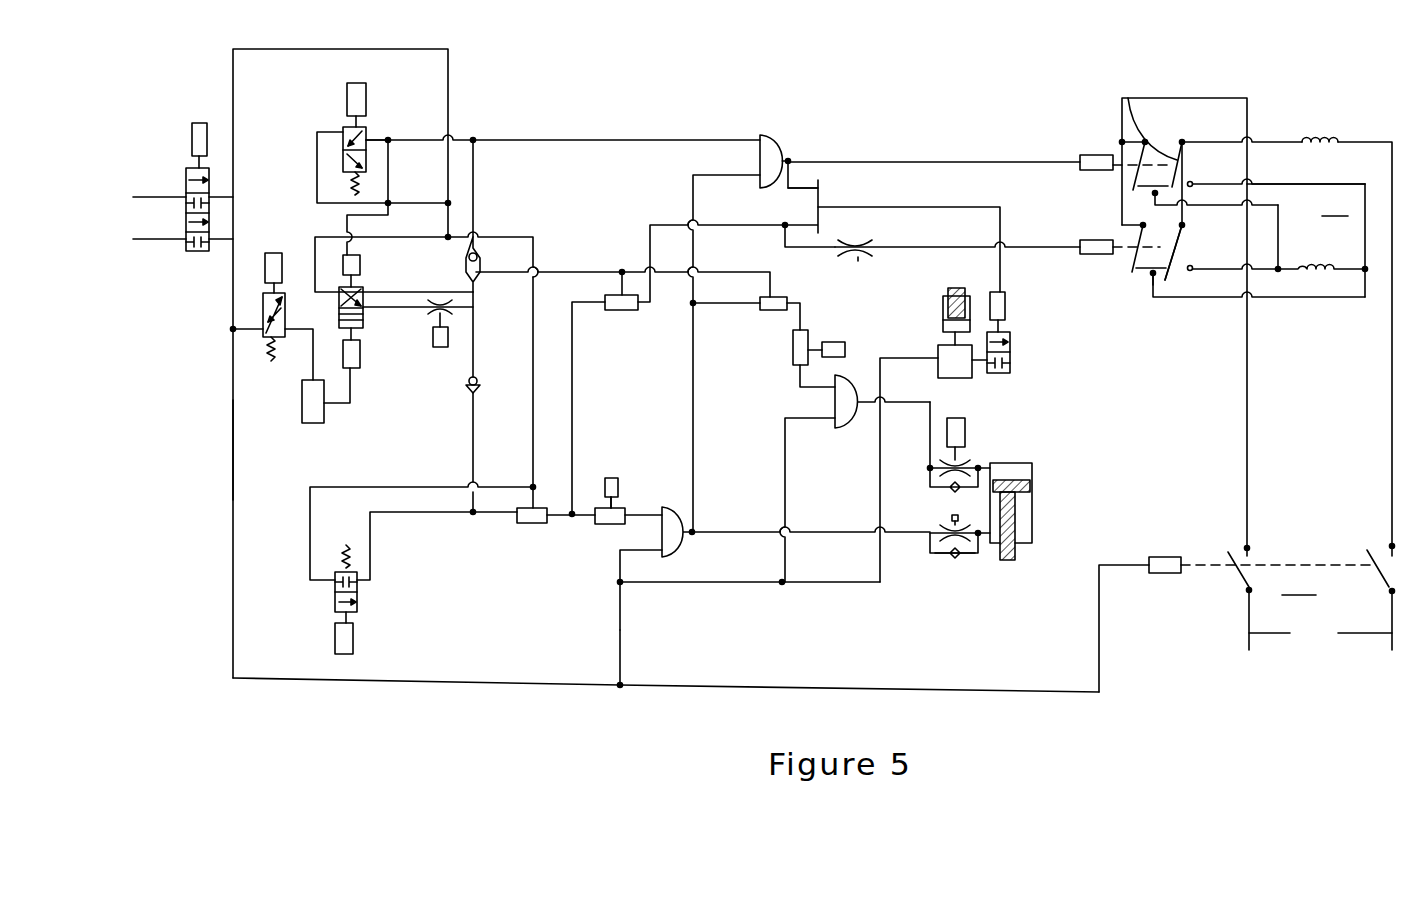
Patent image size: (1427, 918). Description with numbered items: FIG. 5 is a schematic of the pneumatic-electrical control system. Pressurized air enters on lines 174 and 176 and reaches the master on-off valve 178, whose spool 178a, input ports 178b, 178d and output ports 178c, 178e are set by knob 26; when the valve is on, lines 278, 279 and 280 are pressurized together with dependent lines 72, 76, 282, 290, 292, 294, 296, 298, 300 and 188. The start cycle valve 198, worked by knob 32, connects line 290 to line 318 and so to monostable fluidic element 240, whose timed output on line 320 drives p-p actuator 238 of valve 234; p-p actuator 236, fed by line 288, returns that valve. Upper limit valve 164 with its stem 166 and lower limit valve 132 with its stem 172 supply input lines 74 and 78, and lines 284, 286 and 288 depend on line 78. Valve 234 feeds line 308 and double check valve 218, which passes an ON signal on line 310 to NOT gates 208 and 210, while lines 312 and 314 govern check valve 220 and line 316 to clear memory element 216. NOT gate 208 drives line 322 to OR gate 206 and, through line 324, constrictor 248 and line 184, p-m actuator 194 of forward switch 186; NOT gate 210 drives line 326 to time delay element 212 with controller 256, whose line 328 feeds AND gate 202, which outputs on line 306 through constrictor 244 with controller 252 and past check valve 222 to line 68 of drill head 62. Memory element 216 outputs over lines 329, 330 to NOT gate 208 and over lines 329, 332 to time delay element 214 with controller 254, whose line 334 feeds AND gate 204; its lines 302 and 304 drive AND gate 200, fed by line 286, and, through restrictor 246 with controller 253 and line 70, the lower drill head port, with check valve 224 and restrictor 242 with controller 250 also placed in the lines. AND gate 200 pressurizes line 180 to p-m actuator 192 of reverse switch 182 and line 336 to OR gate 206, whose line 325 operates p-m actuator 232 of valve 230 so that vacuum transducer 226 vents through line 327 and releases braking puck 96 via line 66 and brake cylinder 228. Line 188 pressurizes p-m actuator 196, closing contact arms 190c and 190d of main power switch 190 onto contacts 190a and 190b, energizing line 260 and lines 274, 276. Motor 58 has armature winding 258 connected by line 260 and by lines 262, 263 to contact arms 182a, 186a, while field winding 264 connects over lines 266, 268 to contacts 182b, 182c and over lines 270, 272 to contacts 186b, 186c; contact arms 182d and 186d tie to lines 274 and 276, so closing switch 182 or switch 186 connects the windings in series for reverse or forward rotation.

The knob 26 is at (200, 120).
The knob 32 is at (283, 264).
The motor 58 is at (1306, 200).
The drill head 62 is at (1033, 467).
The line 66 is at (948, 337).
The line 68 is at (1003, 462).
The line 70 is at (980, 566).
The line 72 is at (421, 517).
The line 74 is at (437, 546).
The line 76 is at (317, 156).
The line 78 is at (372, 141).
The braking puck 96 is at (965, 281).
The lower limit valve 132 is at (320, 584).
The upper limit valve 164 is at (367, 130).
The valve stem 166 is at (358, 79).
The valve stem 172 is at (358, 642).
The line 174 is at (153, 199).
The line 176 is at (172, 240).
The master on-off valve 178 is at (178, 166).
The valve spool 178a is at (188, 152).
The input port 178b is at (185, 193).
The output port 178c is at (209, 200).
The input port 178d is at (187, 243).
The output port 178e is at (209, 241).
The line 180 is at (933, 160).
The motor reverse direction switch 182 is at (1157, 166).
The contact arm 182a is at (1130, 99).
The contact 182b is at (1193, 185).
The contact 182c is at (1154, 194).
The contact arm 182d is at (1138, 160).
The line 184 is at (908, 246).
The motor forward direction switch 186 is at (1147, 252).
The contact arm 186a is at (1177, 258).
The contact 186b is at (1180, 280).
The contact 186c is at (1152, 275).
The contact arm 186d is at (1138, 240).
The line 188 is at (843, 675).
The main electrical power switch 190 is at (1286, 613).
The contact 190a is at (1388, 545).
The contact 190b is at (1248, 549).
The contact arm 190c is at (1238, 580).
The contact arm 190d is at (1377, 576).
The pneumatic-to-mechanical actuator 192 is at (1075, 171).
The pneumatic-to-mechanical actuator 194 is at (1091, 257).
The pneumatic-to-mechanical actuator 196 is at (1168, 556).
The start cycle valve 198 is at (258, 309).
The AND gate 200 is at (777, 133).
The AND gate 202 is at (860, 385).
The AND gate 204 is at (672, 510).
The OR gate 206 is at (826, 192).
The NOT gate 208 is at (623, 313).
The NOT gate 210 is at (748, 307).
The time delay element 212 is at (792, 349).
The time delay element 214 is at (622, 567).
The memory element 216 is at (532, 520).
The double check valve 218 is at (486, 254).
The check valve 220 is at (441, 437).
The check valve 222 is at (951, 490).
The check valve 224 is at (941, 576).
The vacuum transducer 226 is at (942, 378).
The brake cylinder 228 is at (945, 305).
The valve 230 is at (1011, 333).
The pneumatic-to-mechanical actuator 232 is at (1007, 306).
The valve 234 is at (363, 289).
The pneumatic-to-pneumatic actuator 236 is at (362, 263).
The pneumatic-to-pneumatic actuator 238 is at (361, 356).
The monostable fluidic element 240 is at (300, 399).
The restricting element 242 is at (436, 316).
The restricting element 244 is at (963, 463).
The restricting element 246 is at (960, 519).
The restricting element 248 is at (860, 267).
The controller 250 is at (445, 378).
The controller 252 is at (968, 419).
The controller 253 is at (951, 553).
The controller 254 is at (620, 464).
The controller 256 is at (830, 343).
The armature winding 258 is at (1328, 135).
The line 260 is at (1390, 410).
The line 262 is at (1282, 142).
The line 263 is at (1184, 146).
The field winding 264 is at (1280, 280).
The line 266 is at (1328, 185).
The line 268 is at (1282, 252).
The line 270 is at (1236, 268).
The line 272 is at (1330, 303).
The line 274 is at (1122, 177).
The line 276 is at (1228, 80).
The line 278 is at (235, 120).
The line 279 is at (232, 415).
The line 280 is at (421, 230).
The line 282 is at (532, 383).
The line 284 is at (478, 210).
The line 286 is at (622, 139).
The line 288 is at (390, 189).
The line 290 is at (247, 333).
The line 292 is at (620, 652).
The line 294 is at (596, 605).
The line 296 is at (750, 598).
The line 298 is at (780, 443).
The line 300 is at (880, 450).
The line 302 is at (687, 388).
The line 304 is at (811, 544).
The line 306 is at (882, 441).
The line 308 is at (428, 287).
The line 310 is at (573, 272).
The line 312 is at (413, 308).
The line 314 is at (474, 360).
The line 316 is at (470, 448).
The line 318 is at (310, 344).
The line 320 is at (351, 401).
The line 322 is at (647, 233).
The line 324 is at (823, 248).
The line 325 is at (878, 207).
The line 326 is at (810, 314).
The line 327 is at (942, 422).
The line 328 is at (802, 389).
The line 329 is at (571, 532).
The line 330 is at (574, 385).
The line 332 is at (583, 495).
The line 334 is at (622, 494).
The line 336 is at (788, 189).